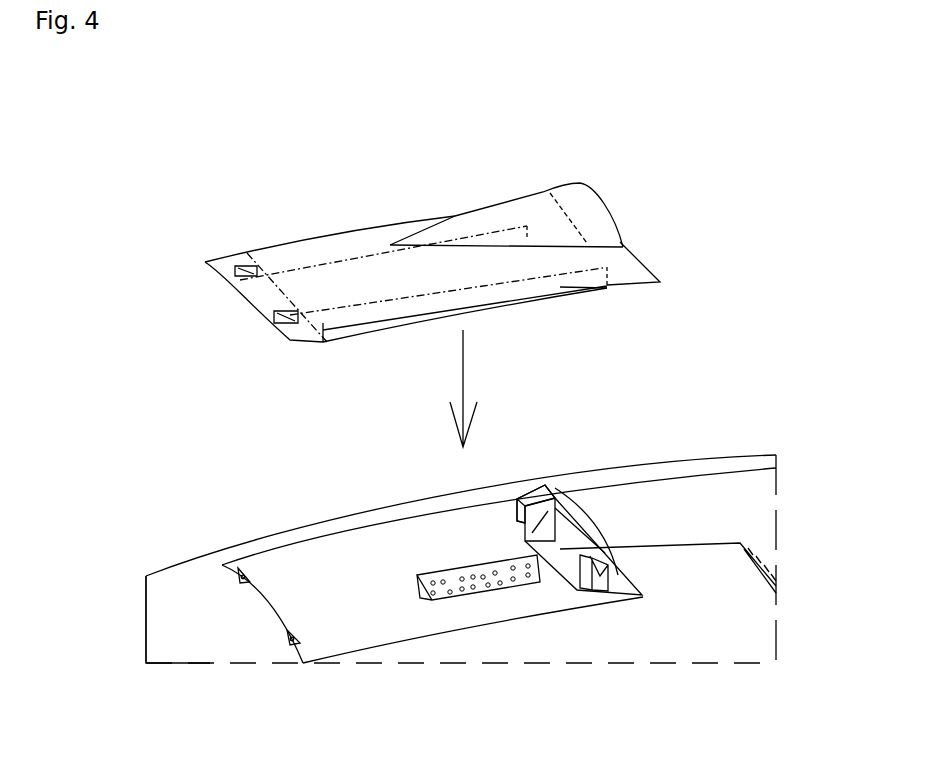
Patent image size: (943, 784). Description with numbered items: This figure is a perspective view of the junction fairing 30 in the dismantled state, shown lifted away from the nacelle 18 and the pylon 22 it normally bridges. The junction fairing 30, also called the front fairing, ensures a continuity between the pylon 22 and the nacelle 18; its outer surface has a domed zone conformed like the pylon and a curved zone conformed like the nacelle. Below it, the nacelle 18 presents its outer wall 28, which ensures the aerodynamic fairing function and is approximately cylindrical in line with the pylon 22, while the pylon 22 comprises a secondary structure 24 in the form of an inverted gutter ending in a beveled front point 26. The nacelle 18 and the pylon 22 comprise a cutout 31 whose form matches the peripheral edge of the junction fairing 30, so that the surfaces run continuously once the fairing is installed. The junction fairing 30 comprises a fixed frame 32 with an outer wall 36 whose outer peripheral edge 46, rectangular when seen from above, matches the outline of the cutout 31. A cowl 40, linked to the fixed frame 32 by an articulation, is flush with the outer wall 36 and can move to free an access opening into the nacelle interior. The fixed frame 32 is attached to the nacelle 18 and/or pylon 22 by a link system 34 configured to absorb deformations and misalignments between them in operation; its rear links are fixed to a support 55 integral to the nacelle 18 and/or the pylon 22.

The nacelle 18 is at (449, 539).
The pylon 22 is at (489, 492).
The secondary structure 24 is at (499, 483).
The beveled front point 26 is at (506, 180).
The outer wall 28 is at (134, 595).
The junction fairing 30 is at (491, 208).
The cutout 31 is at (432, 545).
The fixed frame 32 is at (263, 241).
The link system 34 is at (423, 539).
The outer wall 36 is at (693, 263).
The cowl 40 is at (298, 211).
The outer peripheral edge 46 is at (653, 301).
The support 55 is at (579, 500).